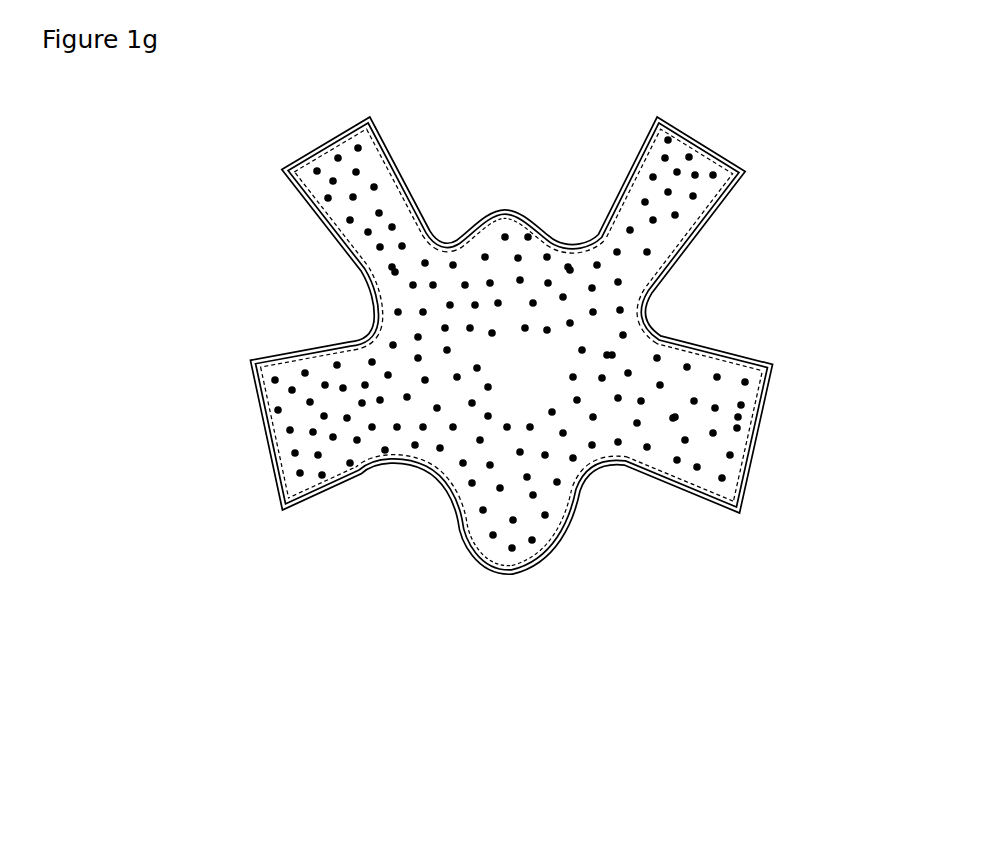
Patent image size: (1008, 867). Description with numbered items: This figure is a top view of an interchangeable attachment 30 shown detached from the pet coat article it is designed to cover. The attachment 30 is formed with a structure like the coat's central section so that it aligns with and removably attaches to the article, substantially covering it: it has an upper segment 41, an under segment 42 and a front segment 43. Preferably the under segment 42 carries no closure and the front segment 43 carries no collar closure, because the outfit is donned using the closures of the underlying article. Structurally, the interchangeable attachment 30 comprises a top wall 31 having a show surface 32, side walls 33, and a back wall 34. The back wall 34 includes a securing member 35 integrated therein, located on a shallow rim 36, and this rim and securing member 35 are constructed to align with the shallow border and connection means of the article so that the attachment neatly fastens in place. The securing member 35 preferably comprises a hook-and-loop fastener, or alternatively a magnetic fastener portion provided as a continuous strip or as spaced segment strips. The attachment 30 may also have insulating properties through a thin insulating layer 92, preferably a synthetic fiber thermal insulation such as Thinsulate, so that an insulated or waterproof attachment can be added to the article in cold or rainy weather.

The interchangeable attachment 30 is at (511, 346).
The top wall 31 is at (481, 352).
The show surface 32 is at (590, 430).
The side walls 33 is at (510, 572).
The back wall 34 is at (258, 420).
The securing member 35 is at (306, 412).
The shallow rim 36 is at (352, 206).
The upper segment 41 is at (477, 438).
The under segment 42 is at (358, 435).
The front segment 43 is at (347, 240).
The insulating layer 92 is at (768, 407).